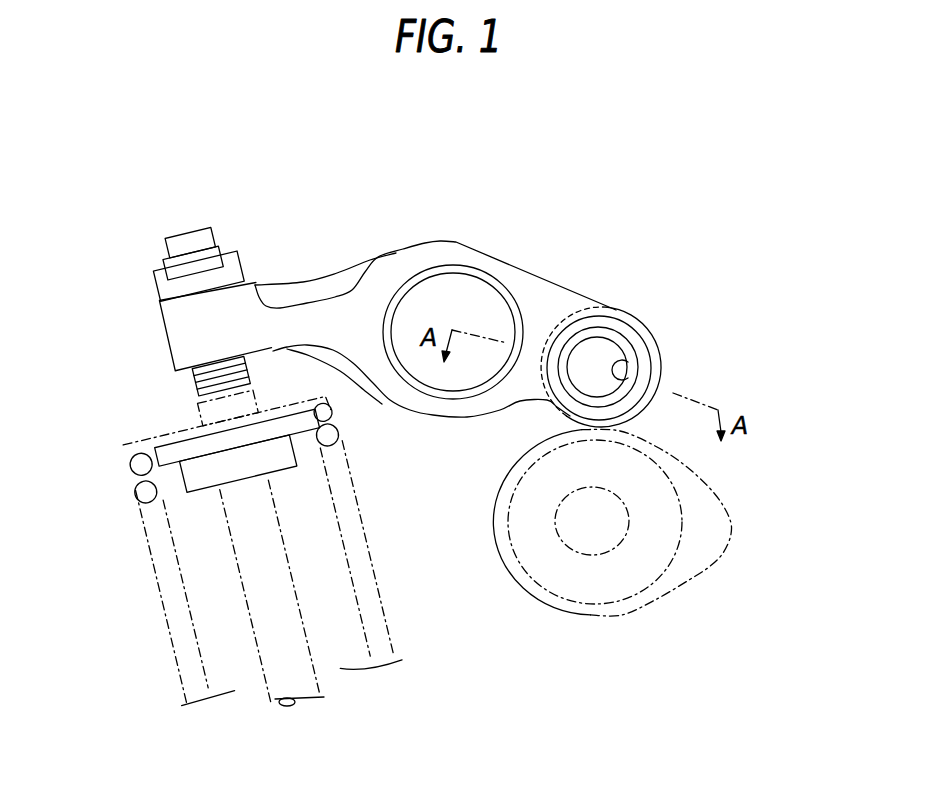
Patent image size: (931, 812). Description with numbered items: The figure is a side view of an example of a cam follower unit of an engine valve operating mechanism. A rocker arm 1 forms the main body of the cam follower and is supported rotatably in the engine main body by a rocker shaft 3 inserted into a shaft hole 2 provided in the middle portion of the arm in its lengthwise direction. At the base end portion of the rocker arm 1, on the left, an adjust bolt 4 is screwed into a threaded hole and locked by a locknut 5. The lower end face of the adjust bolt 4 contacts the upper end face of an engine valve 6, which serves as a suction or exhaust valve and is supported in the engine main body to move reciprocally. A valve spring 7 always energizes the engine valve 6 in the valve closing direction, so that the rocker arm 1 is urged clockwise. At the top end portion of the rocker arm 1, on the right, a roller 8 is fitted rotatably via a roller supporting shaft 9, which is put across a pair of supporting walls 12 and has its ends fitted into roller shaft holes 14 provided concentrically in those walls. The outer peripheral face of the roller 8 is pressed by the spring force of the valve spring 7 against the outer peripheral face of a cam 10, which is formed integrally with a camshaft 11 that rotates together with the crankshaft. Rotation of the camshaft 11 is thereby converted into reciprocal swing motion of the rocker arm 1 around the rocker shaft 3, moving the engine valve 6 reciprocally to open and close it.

The rocker arm 1 is at (496, 260).
The shaft hole 2 is at (436, 393).
The rocker shaft 3 is at (450, 298).
The adjust bolt 4 is at (192, 242).
The locknut 5 is at (158, 289).
The engine valve 6 is at (297, 610).
The valve spring 7 is at (163, 613).
The roller 8 is at (655, 357).
The roller supporting shaft 9 is at (597, 353).
The cam 10 is at (723, 550).
The camshaft 11 is at (673, 553).
The supporting wall 12 is at (553, 295).
The roller shaft hole 14 is at (620, 377).